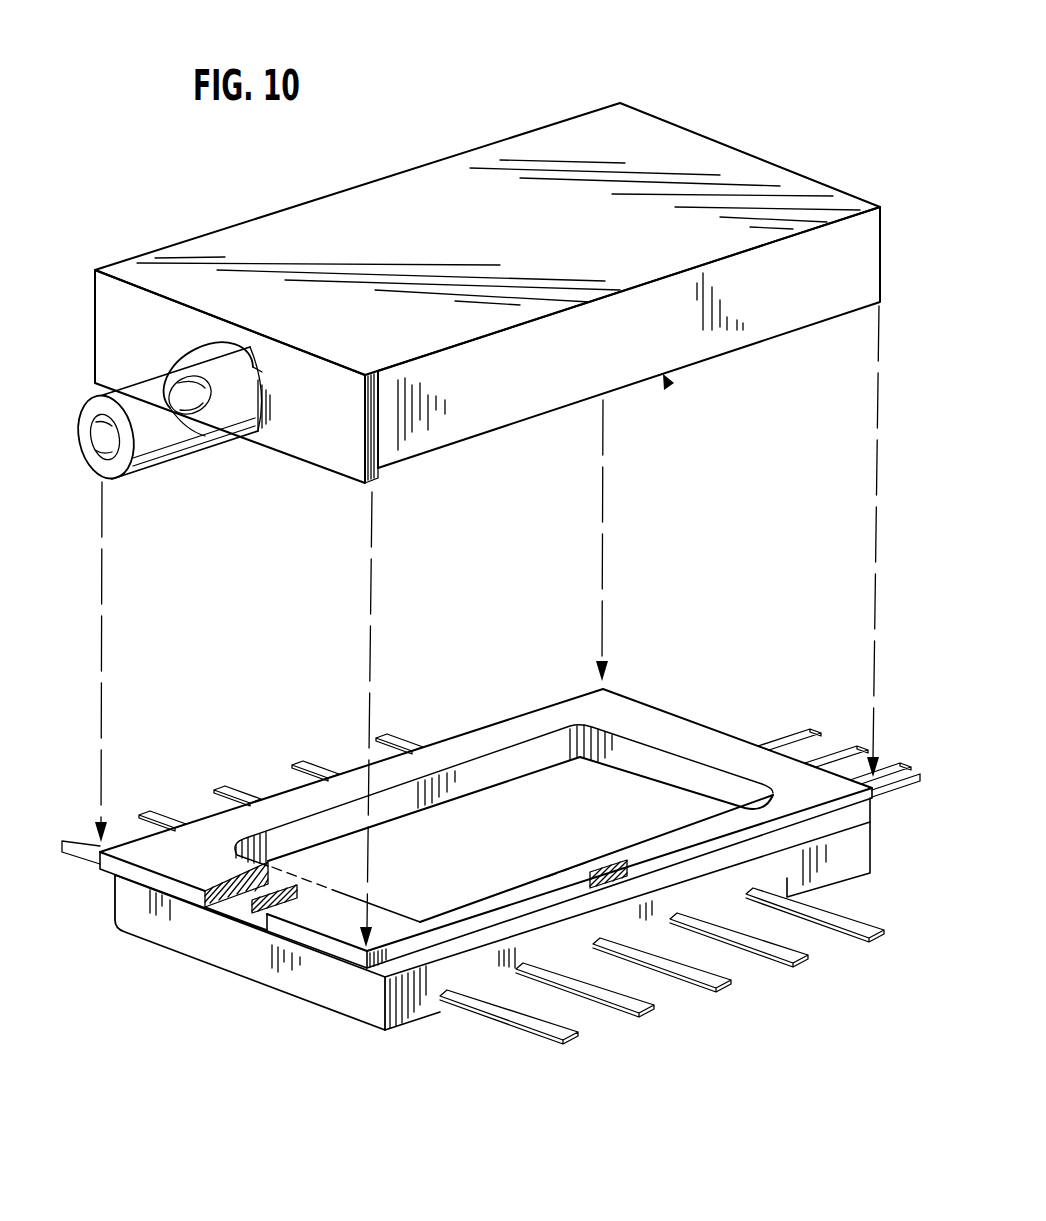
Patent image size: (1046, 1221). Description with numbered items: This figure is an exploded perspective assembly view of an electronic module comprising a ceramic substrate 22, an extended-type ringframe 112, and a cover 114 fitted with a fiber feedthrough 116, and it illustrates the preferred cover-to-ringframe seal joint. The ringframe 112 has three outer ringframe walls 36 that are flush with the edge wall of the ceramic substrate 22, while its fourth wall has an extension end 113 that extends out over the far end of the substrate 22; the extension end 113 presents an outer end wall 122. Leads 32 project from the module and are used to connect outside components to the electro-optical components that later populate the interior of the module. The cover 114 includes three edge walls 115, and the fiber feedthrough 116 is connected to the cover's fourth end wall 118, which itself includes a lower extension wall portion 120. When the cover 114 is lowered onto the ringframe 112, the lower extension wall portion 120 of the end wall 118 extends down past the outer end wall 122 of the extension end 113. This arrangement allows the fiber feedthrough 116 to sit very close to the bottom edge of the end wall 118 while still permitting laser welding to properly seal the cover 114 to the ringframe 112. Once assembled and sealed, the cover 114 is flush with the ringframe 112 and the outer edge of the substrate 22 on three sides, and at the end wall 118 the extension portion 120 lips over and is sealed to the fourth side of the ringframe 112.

The ceramic substrate 22 is at (850, 873).
The leads 32 is at (320, 770).
The outer ringframe walls 36 is at (850, 770).
The ringframe 112 is at (484, 735).
The extension end 113 is at (385, 966).
The cover 114 is at (667, 385).
The edge walls 115 is at (798, 174).
The fiber feedthrough 116 is at (155, 472).
The end wall 118 is at (98, 300).
The lower extension wall portion 120 is at (382, 471).
The outer end wall 122 is at (158, 882).